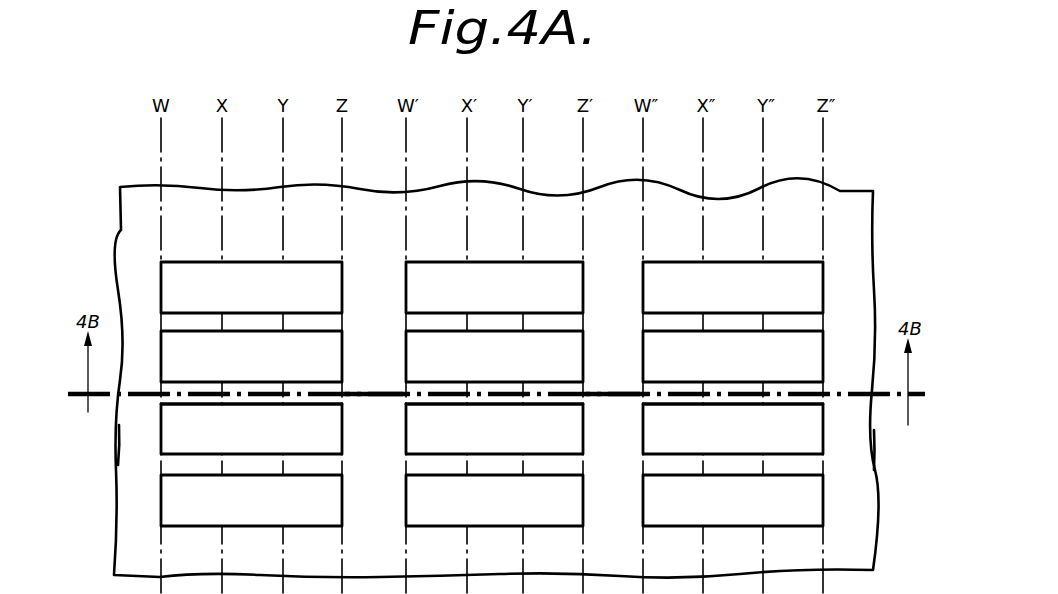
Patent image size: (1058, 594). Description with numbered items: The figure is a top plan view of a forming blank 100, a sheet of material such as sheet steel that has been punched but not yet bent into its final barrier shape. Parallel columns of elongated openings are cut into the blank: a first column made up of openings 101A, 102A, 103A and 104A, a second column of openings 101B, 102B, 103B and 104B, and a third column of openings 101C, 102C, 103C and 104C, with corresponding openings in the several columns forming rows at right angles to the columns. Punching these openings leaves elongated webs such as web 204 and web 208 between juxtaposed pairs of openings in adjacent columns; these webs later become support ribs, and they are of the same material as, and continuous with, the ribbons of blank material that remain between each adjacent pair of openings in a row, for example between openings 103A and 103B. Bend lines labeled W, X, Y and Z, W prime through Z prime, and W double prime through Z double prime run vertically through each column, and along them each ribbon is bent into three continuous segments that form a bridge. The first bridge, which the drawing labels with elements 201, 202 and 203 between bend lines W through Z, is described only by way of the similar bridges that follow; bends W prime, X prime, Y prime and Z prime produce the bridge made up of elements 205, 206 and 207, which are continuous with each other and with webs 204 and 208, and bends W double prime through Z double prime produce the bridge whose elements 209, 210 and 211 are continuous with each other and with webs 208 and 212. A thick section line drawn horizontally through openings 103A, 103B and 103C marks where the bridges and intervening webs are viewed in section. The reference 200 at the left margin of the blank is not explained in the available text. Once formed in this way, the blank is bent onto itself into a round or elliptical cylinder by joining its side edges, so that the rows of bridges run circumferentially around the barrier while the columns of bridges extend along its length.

The forming blank 100 is at (851, 240).
The elongated opening 101A is at (183, 278).
The elongated opening 102A is at (236, 345).
The elongated opening 103A is at (304, 405).
The elongated opening 104A is at (212, 510).
The elongated opening 101B is at (425, 280).
The elongated opening 102B is at (480, 345).
The elongated opening 103B is at (546, 405).
The elongated opening 104B is at (452, 512).
The elongated opening 101C is at (663, 278).
The elongated opening 102C is at (722, 348).
The elongated opening 103C is at (778, 410).
The elongated opening 104C is at (683, 510).
The substrate 200 is at (135, 443).
The electrode segment 201 is at (196, 401).
The electrode segment 202 is at (270, 400).
The electrode segment 203 is at (335, 397).
The web 204 is at (373, 403).
The bridge element 205 is at (455, 401).
The bridge element 206 is at (502, 400).
The bridge element 207 is at (578, 397).
The web 208 is at (612, 410).
The bridge element 209 is at (680, 403).
The bridge element 210 is at (742, 403).
The bridge element 211 is at (812, 399).
The web 212 is at (847, 448).